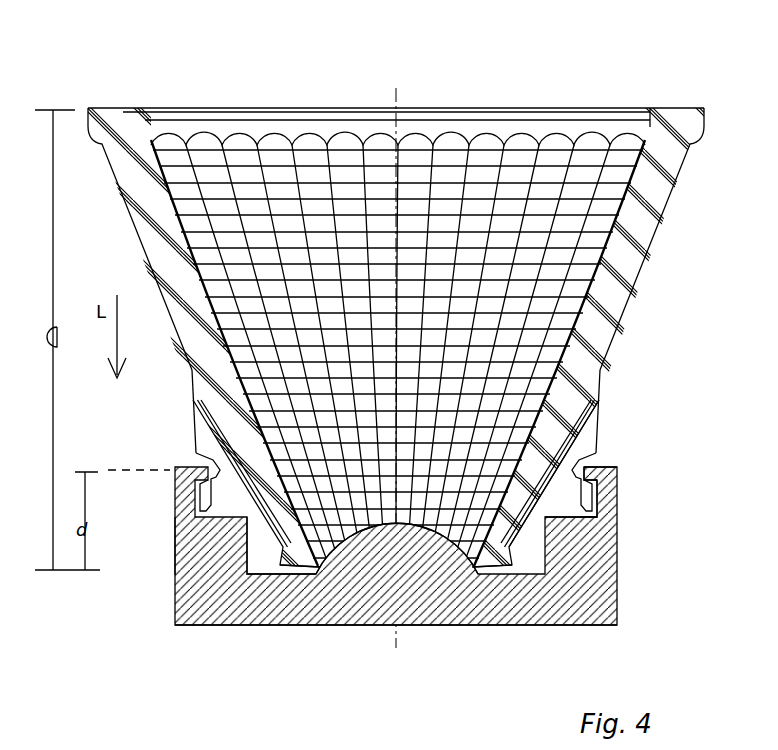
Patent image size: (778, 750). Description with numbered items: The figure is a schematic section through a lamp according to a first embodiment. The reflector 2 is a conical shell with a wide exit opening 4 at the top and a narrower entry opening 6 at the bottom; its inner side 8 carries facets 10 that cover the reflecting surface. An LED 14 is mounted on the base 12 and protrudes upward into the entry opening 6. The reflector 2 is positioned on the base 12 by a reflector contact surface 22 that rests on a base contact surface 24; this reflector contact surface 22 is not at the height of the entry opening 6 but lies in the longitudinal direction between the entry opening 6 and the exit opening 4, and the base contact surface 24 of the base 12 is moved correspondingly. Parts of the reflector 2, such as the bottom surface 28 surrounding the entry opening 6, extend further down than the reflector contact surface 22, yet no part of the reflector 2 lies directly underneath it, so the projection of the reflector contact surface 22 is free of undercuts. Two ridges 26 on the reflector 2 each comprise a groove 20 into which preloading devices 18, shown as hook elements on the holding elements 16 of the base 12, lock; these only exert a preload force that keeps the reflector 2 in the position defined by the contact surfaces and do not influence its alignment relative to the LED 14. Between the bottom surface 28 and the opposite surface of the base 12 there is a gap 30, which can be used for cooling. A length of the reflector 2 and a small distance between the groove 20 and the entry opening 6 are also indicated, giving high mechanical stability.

The reflector 2 is at (560, 130).
The exit opening 4 is at (455, 97).
The entry opening 6 is at (283, 588).
The inner side of the reflector 8 is at (504, 196).
The facets 10 is at (580, 268).
The base 12 is at (482, 604).
The LED 14 is at (365, 552).
The holding elements 16 is at (614, 499).
The preloading device 18 is at (613, 468).
The groove 20 is at (578, 468).
The reflector contact surface 22 is at (198, 458).
The base contact surface 24 is at (177, 546).
The ridges 26 is at (207, 390).
The bottom surface 28 is at (582, 408).
The gap 30 is at (270, 604).